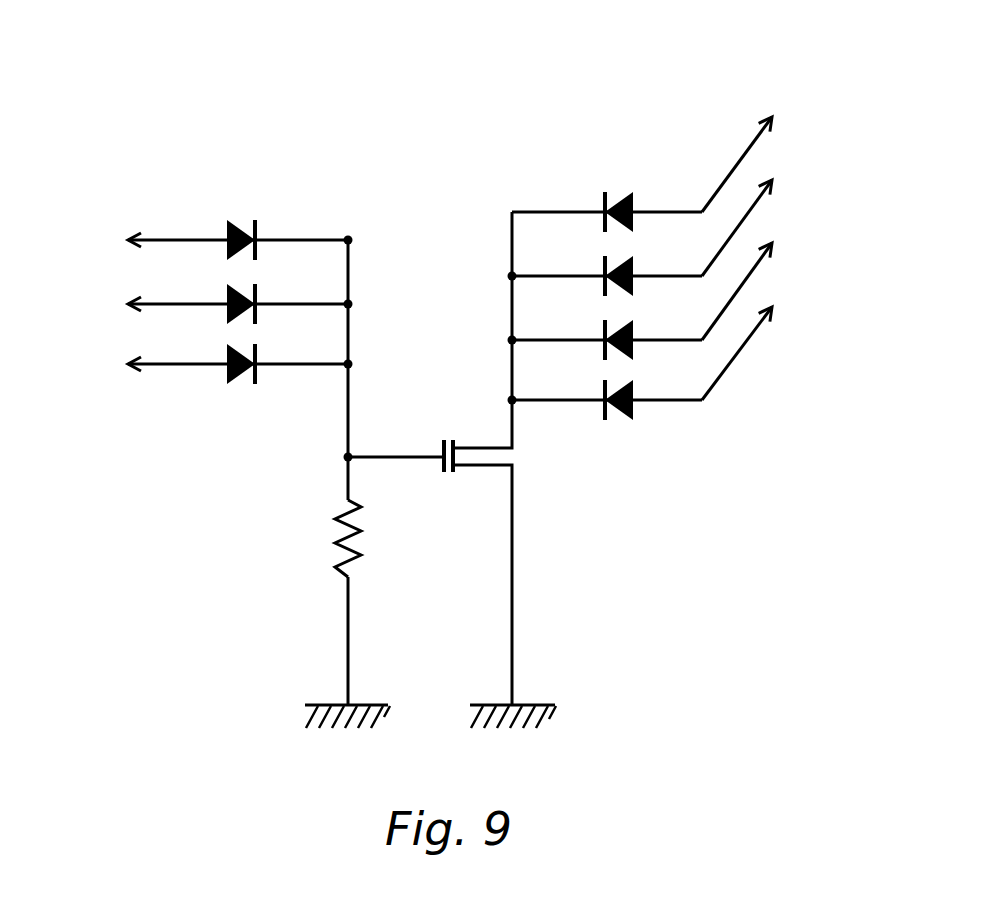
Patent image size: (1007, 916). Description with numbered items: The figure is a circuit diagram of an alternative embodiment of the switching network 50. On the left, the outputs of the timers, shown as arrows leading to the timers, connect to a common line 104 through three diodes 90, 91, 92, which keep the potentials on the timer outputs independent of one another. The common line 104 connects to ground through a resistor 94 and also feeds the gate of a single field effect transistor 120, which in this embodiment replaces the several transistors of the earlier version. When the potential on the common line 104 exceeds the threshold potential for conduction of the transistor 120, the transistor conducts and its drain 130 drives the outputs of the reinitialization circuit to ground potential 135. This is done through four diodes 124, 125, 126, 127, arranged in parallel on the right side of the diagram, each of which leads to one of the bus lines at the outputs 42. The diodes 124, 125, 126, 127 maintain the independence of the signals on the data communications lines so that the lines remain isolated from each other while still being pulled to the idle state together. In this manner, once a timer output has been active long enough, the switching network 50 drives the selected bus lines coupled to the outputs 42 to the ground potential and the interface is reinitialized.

The switching network 50 is at (449, 374).
The diode 90 is at (256, 226).
The diode 91 is at (256, 290).
The diode 92 is at (256, 350).
The resistor 94 is at (340, 545).
The common line 104 is at (349, 393).
The field effect transistor 120 is at (444, 441).
The diode 124 is at (607, 166).
The diode 125 is at (633, 256).
The diode 126 is at (633, 352).
The diode 127 is at (623, 418).
The drain 130 is at (500, 449).
The ground potential 135 is at (513, 520).
The outputs 42 is at (755, 143).